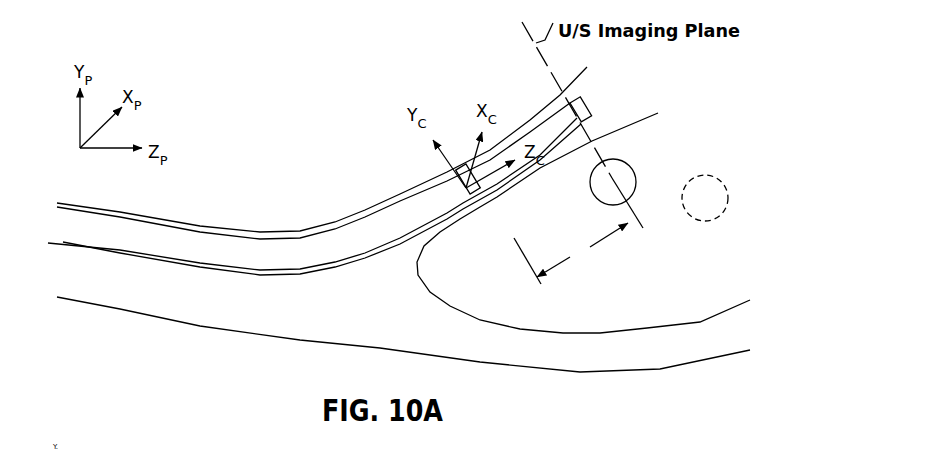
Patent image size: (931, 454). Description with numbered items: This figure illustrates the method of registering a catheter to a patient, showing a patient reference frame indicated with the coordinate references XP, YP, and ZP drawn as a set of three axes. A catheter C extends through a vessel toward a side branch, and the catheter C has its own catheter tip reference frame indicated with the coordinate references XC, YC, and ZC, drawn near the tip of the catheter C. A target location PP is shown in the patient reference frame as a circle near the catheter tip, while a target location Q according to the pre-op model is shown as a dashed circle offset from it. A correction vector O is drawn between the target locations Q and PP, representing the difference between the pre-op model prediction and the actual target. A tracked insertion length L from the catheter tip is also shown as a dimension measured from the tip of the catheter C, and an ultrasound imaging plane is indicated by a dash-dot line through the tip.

The catheter C is at (320, 209).
The correction vector O is at (617, 182).
The target location according to the pre-op model Q is at (736, 216).
The target location PP is at (596, 198).
The tracked insertion length L is at (571, 253).